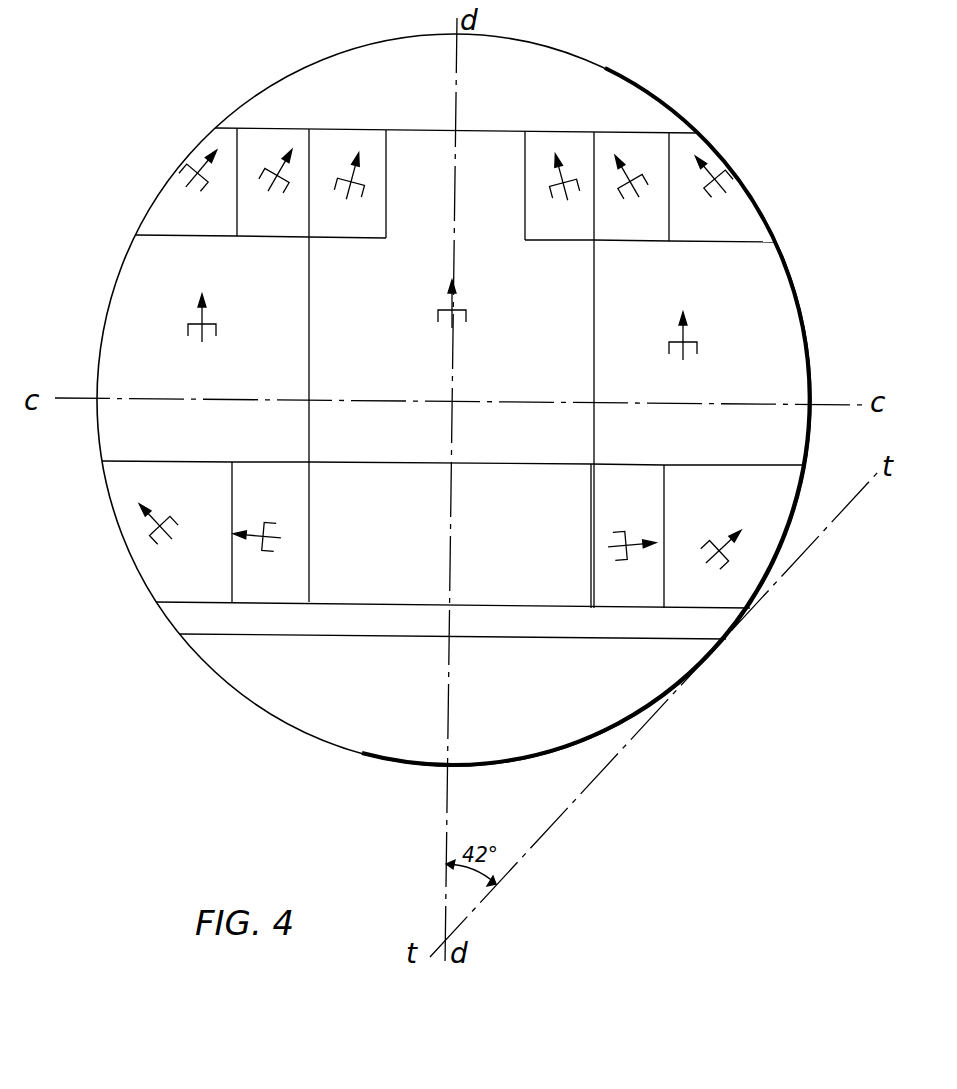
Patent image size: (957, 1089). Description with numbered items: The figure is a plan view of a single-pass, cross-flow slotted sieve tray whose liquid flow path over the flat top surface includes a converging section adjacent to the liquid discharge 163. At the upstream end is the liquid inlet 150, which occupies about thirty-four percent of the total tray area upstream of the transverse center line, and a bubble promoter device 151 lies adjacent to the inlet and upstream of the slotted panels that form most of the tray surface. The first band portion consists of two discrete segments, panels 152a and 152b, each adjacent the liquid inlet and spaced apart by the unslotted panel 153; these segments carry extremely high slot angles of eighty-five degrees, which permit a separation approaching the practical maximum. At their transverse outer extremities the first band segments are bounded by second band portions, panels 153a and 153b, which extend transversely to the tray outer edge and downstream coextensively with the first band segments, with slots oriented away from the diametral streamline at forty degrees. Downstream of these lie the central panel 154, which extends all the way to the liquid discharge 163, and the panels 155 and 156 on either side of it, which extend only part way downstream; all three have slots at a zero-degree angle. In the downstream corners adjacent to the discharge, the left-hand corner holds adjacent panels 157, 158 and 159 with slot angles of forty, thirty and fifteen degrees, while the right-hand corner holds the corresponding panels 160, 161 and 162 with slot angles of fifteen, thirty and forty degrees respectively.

The liquid inlet 150 is at (383, 732).
The bubble promoter device 151 is at (175, 615).
The first band portion panel 152a is at (267, 593).
The first band portion panel 152b is at (617, 595).
The unslotted panel 153 is at (415, 597).
The second band portion panel 153a is at (150, 573).
The second band portion panel 153b is at (737, 595).
The central panel 154 is at (567, 308).
The downstream side panel 155 is at (135, 265).
The downstream side panel 156 is at (767, 280).
The corner panel 157 is at (213, 142).
The corner panel 158 is at (265, 135).
The corner panel 159 is at (342, 140).
The corner panel 160 is at (580, 143).
The corner panel 161 is at (650, 140).
The corner panel 162 is at (698, 143).
The liquid discharge 163 is at (577, 77).